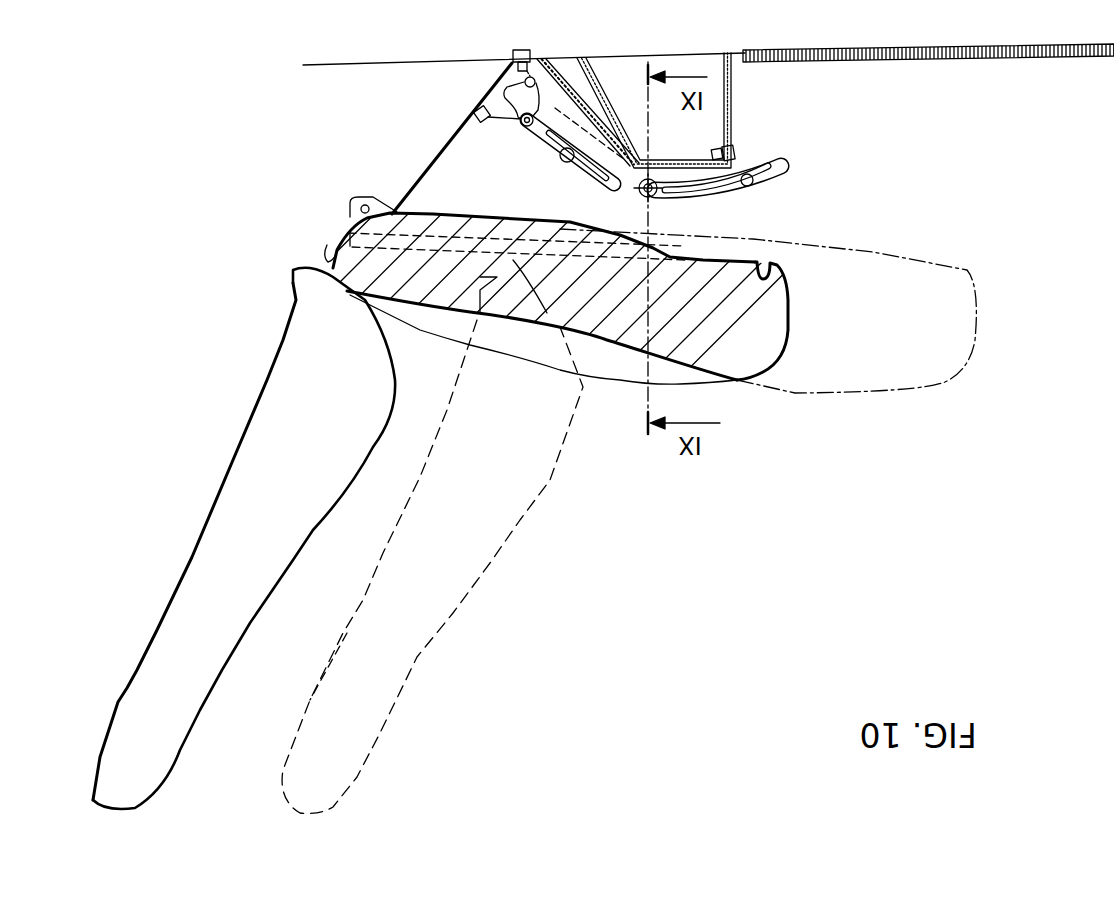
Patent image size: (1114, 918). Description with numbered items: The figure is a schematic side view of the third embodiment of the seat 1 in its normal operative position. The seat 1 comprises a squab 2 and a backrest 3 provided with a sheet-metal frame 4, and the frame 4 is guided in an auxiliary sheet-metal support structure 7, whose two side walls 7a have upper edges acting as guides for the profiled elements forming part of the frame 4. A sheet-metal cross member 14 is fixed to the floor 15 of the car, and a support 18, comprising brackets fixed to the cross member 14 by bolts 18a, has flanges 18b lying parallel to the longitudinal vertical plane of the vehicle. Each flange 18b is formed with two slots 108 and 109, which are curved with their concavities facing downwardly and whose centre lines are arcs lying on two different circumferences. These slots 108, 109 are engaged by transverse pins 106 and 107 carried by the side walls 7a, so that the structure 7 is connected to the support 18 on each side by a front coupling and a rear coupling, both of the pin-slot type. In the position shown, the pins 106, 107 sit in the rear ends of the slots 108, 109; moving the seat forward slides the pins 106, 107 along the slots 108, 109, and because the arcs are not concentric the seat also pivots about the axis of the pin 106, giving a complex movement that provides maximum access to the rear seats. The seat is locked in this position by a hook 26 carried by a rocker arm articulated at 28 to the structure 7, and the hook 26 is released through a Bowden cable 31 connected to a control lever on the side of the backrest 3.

The seat 1 is at (460, 390).
The squab 2 is at (633, 333).
The backrest 3 is at (243, 492).
The sheet-metal frame 4 is at (673, 233).
The auxiliary sheet-metal support structure 7 is at (432, 156).
The side walls 7a is at (453, 147).
The sheet-metal cross member 14 is at (727, 86).
The floor 15 is at (386, 64).
The support 18 is at (606, 169).
The bolts 18a is at (556, 104).
The flanges 18b is at (751, 158).
The hook 26 is at (543, 101).
The articulation of rocker arm 28 is at (521, 123).
The Bowden cable 31 is at (410, 193).
The transverse pin 106 is at (640, 194).
The transverse pin 107 is at (525, 81).
The slot 108 is at (745, 155).
The slot 109 is at (561, 157).